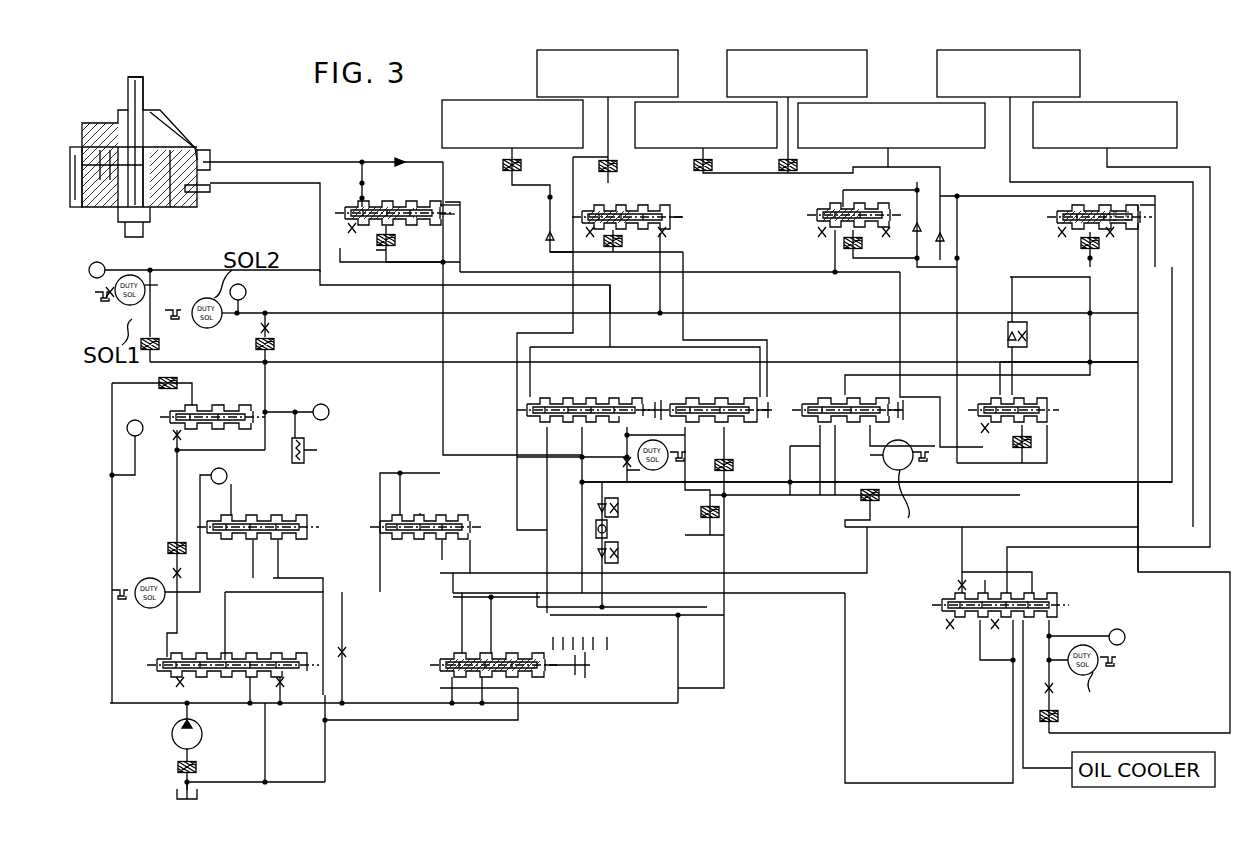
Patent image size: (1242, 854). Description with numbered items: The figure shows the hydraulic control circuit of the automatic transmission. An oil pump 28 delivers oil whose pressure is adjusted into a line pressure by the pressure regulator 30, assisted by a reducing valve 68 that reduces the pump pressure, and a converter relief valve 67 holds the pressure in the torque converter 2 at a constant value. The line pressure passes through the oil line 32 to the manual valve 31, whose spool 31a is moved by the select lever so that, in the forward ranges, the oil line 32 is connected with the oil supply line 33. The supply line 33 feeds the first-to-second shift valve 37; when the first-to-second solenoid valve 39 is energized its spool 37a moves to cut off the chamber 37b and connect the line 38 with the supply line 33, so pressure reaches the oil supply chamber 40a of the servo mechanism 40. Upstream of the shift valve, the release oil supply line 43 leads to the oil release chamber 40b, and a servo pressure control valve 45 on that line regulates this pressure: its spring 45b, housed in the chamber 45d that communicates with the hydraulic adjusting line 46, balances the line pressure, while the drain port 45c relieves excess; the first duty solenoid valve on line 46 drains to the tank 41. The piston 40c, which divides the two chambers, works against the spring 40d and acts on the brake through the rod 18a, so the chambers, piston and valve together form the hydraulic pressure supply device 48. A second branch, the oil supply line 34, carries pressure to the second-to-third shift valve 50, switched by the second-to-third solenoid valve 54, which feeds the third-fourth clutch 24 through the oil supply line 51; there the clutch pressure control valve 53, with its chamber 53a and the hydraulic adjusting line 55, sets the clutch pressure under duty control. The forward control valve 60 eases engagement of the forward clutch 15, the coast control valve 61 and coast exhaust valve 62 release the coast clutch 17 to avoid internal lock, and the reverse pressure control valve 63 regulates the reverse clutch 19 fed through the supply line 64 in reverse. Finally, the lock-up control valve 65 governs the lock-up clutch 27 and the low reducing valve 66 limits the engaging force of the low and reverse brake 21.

The torque converter 2 is at (1080, 73).
The forward clutch 15 is at (538, 73).
The coast clutch 17 is at (697, 102).
The rod 18a is at (145, 92).
The reverse clutch 19 is at (464, 95).
The low & reverse brake 21 is at (950, 148).
The 3-4 clutch 24 is at (867, 72).
The lock-up clutch 27 is at (1152, 101).
The oil pump 28 is at (203, 732).
The pressure regulator 30 is at (273, 646).
The manual valve 31 is at (575, 677).
The spool 31a is at (420, 678).
The oil line 32 is at (550, 704).
The oil supply line 33 is at (583, 544).
The oil supply line 34 is at (745, 558).
The 1-2 shift valve 37 is at (610, 396).
The spool 37a is at (574, 398).
The chamber 37b is at (622, 400).
The line 38 is at (610, 298).
The 1-2 solenoid valve 39 is at (654, 470).
The servo mechanism 40 is at (110, 120).
The oil supply chamber 40a is at (78, 204).
The oil release chamber 40b is at (208, 158).
The piston 40c is at (175, 208).
The spring 40d is at (172, 144).
The tank 41 is at (108, 296).
The release oil supply line 43 is at (311, 162).
The servo pressure control valve 45 is at (396, 197).
The spring 45b is at (440, 205).
The drain port 45c is at (440, 237).
The chamber 45d is at (440, 215).
The hydraulic adjusting line 46 is at (433, 272).
The hydraulic pressure supply device 48 is at (364, 164).
The 2-3 shift valve 50 is at (838, 394).
The oil supply line 51 is at (827, 190).
The 3-4 clutch pressure control valve 53 is at (1106, 201).
The chamber 53a is at (1140, 206).
The 2-3 solenoid valve 54 is at (895, 484).
The hydraulic adjusting line 55 is at (1136, 300).
The forward control valve 60 is at (818, 229).
The coast control valve 61 is at (1055, 418).
The coast exhaust valve 62 is at (687, 391).
The reverse pressure control valve 63 is at (658, 200).
The supply line 64 is at (573, 172).
The lock-up control valve 65 is at (1040, 590).
The low reducing valve 66 is at (443, 540).
The converter relief valve 67 is at (277, 510).
The reducing valve 68 is at (215, 407).